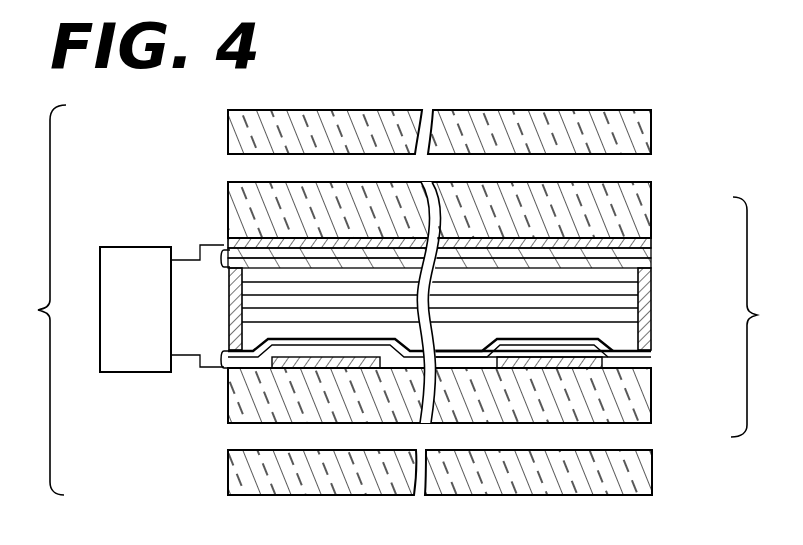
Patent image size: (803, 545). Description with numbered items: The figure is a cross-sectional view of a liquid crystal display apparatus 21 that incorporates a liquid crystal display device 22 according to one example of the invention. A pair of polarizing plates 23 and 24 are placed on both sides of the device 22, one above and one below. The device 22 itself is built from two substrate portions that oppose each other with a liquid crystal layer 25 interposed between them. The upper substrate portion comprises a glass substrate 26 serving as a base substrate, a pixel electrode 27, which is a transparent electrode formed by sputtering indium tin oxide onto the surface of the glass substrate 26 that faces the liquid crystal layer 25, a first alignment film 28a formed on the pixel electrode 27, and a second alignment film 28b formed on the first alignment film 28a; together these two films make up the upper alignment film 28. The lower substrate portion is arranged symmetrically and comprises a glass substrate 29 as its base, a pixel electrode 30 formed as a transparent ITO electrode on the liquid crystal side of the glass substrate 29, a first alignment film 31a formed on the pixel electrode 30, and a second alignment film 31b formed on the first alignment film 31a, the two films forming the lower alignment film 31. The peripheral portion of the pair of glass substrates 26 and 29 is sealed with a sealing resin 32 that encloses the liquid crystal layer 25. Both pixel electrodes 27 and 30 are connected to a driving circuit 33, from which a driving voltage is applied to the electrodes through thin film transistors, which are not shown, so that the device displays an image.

The liquid crystal display apparatus 21 is at (39, 300).
The liquid crystal display device 22 is at (759, 317).
The polarizing plate 23 is at (655, 137).
The polarizing plate 24 is at (652, 486).
The liquid crystal layer 25 is at (652, 290).
The glass substrate 26 is at (651, 198).
The pixel electrode 27 is at (652, 243).
The alignment film 28 is at (202, 258).
The first alignment film 28a is at (652, 254).
The second alignment film 28b is at (652, 265).
The glass substrate 29 is at (652, 418).
The pixel electrode 30 is at (608, 372).
The alignment film 31 is at (212, 367).
The first alignment film 31a is at (652, 366).
The second alignment film 31b is at (652, 357).
The sealing resin 32 is at (228, 305).
The driving circuit 33 is at (136, 247).